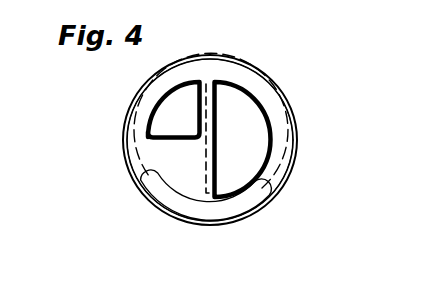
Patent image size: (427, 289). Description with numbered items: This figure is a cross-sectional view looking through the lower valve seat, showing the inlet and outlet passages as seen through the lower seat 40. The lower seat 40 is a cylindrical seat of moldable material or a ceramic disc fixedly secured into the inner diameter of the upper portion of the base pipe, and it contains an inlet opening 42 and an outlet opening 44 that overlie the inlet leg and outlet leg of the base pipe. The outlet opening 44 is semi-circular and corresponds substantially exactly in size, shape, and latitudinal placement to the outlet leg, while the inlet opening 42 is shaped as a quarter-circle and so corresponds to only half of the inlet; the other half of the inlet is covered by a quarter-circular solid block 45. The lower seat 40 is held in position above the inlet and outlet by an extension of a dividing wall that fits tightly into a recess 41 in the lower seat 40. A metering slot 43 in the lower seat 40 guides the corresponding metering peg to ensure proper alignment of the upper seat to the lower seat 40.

The lower seat 40 is at (114, 134).
The recess 41 is at (213, 83).
The inlet opening 42 is at (173, 111).
The metering slot 43 is at (242, 202).
The outlet opening 44 is at (242, 151).
The quarter-circular solid block 45 is at (173, 172).